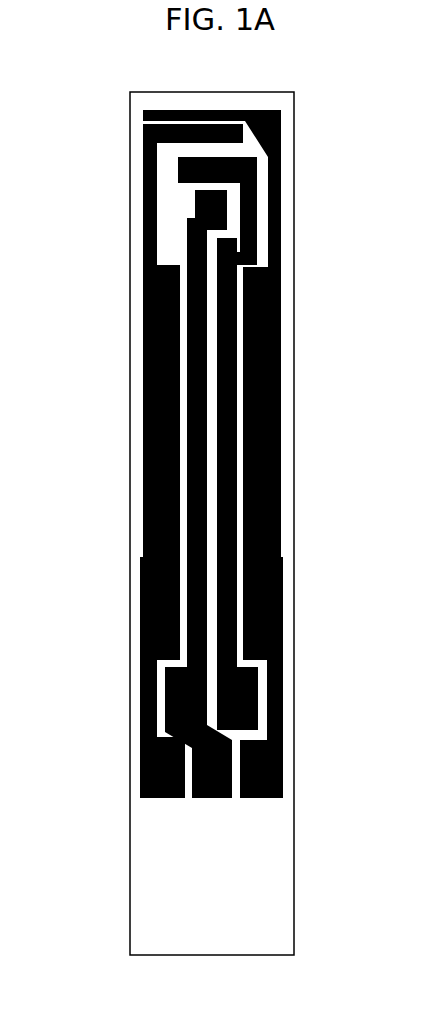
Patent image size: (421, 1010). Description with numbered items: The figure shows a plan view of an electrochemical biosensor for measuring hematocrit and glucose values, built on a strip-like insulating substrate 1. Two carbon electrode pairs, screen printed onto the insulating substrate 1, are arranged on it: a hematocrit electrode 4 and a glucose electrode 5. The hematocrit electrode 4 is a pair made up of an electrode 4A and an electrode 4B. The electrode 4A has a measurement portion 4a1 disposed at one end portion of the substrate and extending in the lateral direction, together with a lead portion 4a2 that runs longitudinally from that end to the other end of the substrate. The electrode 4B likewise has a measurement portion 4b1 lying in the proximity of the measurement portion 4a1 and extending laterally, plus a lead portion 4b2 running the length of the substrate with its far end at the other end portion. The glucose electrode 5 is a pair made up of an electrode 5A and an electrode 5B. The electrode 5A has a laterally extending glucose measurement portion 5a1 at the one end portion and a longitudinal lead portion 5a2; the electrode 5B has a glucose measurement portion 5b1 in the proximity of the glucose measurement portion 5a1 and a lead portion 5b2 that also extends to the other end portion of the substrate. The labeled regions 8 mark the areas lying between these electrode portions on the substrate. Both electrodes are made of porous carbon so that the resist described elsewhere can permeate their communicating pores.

The insulating substrate 1 is at (294, 438).
The hematocrit electrode 4 is at (207, 438).
The electrode 4A is at (219, 435).
The electrode 4B is at (160, 438).
The measurement portion 4a1 is at (208, 110).
The lead portion 4a2 is at (283, 781).
The measurement portion 4b1 is at (228, 110).
The lead portion 4b2 is at (139, 782).
The glucose electrode 5 is at (220, 515).
The electrode 5A is at (205, 429).
The electrode 5B is at (204, 530).
The glucose measurement portion 5a1 is at (178, 173).
The lead portion 5a2 is at (259, 697).
The glucose measurement portion 5b1 is at (195, 202).
The lead portion 5b2 is at (211, 800).
The gap between electrodes 8 is at (409, 589).